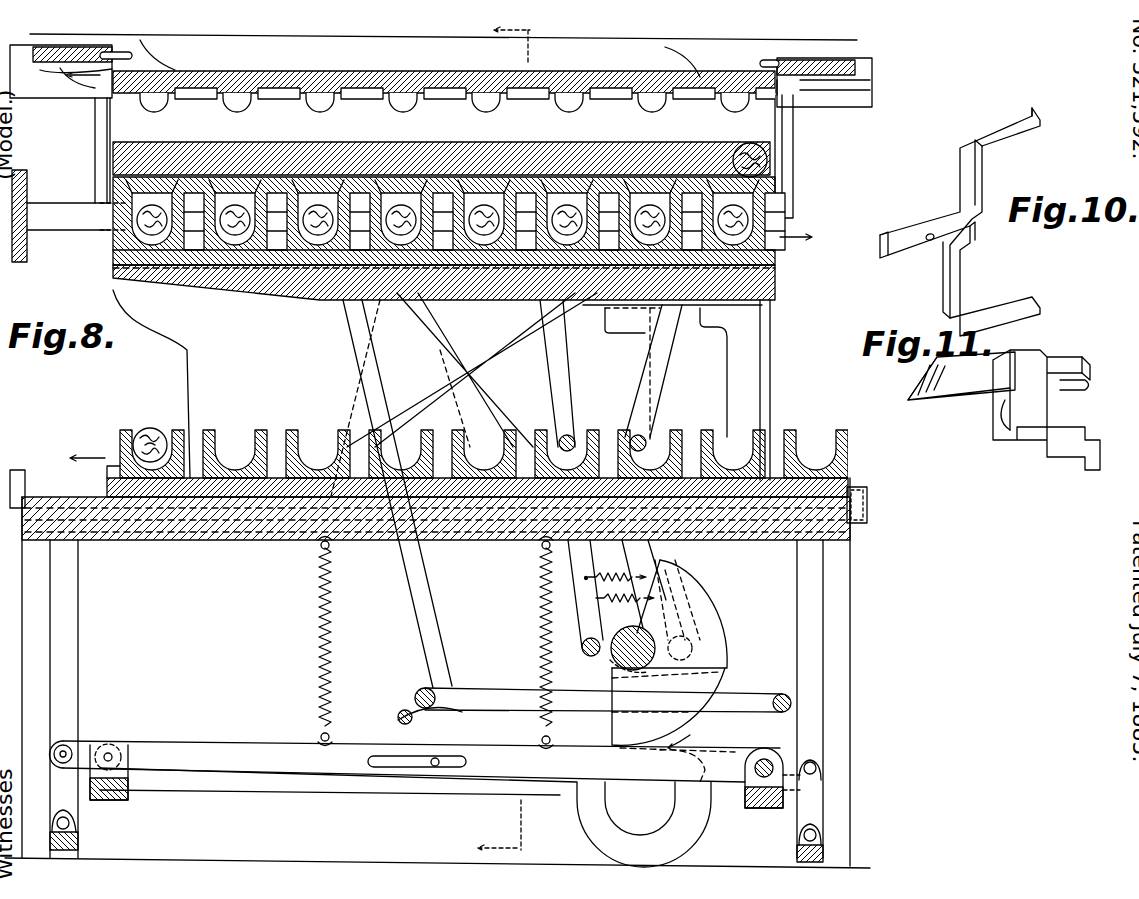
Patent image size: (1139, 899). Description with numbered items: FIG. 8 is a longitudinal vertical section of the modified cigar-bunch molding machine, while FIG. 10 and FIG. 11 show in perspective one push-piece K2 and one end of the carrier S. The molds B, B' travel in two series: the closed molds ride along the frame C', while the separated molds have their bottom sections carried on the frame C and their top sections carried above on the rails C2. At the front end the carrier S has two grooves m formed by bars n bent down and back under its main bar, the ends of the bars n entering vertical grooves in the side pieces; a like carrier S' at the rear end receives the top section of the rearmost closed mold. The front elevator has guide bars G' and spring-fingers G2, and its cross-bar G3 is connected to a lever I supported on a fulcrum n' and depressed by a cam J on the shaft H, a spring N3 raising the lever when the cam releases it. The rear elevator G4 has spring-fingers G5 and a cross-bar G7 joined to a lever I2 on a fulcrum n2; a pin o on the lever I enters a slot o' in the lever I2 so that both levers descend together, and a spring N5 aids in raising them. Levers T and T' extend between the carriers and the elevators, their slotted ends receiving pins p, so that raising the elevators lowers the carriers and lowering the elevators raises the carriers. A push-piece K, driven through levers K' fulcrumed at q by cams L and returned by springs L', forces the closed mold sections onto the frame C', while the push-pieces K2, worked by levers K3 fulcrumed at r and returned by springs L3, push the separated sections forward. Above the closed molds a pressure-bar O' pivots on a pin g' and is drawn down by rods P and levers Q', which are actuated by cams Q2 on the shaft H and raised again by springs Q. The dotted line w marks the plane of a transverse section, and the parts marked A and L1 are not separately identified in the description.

In FIG. 8, the carrier S' is at (455, 76).
In FIG. 8, the pin p is at (78, 55).
In FIG. 11, the pin p is at (1076, 373).
In FIG. 8, the bar n is at (439, 145).
In FIG. 11, the bar n is at (1046, 420).
In FIG. 8, the groove m is at (63, 92).
In FIG. 11, the groove m is at (1028, 417).
In FIG. 8, the dotted section line w is at (507, 439).
In FIG. 8, the mold B' is at (478, 157).
In FIG. 8, the rail C2 is at (520, 98).
In FIG. 8, the pressure-bar O' is at (441, 149).
In FIG. 8, the pin g' is at (777, 160).
In FIG. 8, the push-piece K is at (68, 216).
In FIG. 8, the frame C' is at (444, 292).
In FIG. 8, the frame A is at (201, 384).
In FIG. 8, the mold B is at (474, 370).
In FIG. 8, the link or rod P is at (391, 494).
In FIG. 8, the lever T' is at (472, 370).
In FIG. 8, the lever T is at (465, 370).
In FIG. 8, the lever K' is at (557, 373).
In FIG. 8, the fulcrum q is at (572, 440).
In FIG. 8, the lever K3 is at (653, 372).
In FIG. 8, the fulcrum r is at (646, 438).
In FIG. 8, the push-piece K2 is at (676, 390).
In FIG. 10, the push-piece K2 is at (960, 222).
In FIG. 8, the spring-finger G2 is at (57, 480).
In FIG. 8, the spring-finger G5 is at (832, 660).
In FIG. 8, the elevator G4 is at (867, 520).
In FIG. 8, the bar G' is at (437, 673).
In FIG. 8, the frame C is at (471, 555).
In FIG. 8, the spring N5 is at (338, 641).
In FIG. 8, the spring N3 is at (535, 643).
In FIG. 8, the spring L' is at (607, 598).
In FIG. 8, the spring L3 is at (625, 601).
In FIG. 8, the lever arm L1 is at (664, 586).
In FIG. 8, the shaft H is at (612, 660).
In FIG. 8, the cam L is at (679, 614).
In FIG. 8, the cam J is at (668, 709).
In FIG. 8, the cam Q2 is at (620, 668).
In FIG. 8, the lever Q' is at (603, 699).
In FIG. 8, the spring Q is at (439, 719).
In FIG. 8, the lever I is at (414, 761).
In FIG. 8, the lever I2 is at (203, 742).
In FIG. 8, the fulcrum n2 is at (110, 745).
In FIG. 8, the slot o' is at (390, 783).
In FIG. 8, the pin o is at (433, 778).
In FIG. 8, the fulcrum n' is at (764, 767).
In FIG. 8, the cross-bar G3 is at (78, 838).
In FIG. 8, the cross-bar G7 is at (797, 855).
In FIG. 11, the carrier S is at (961, 376).